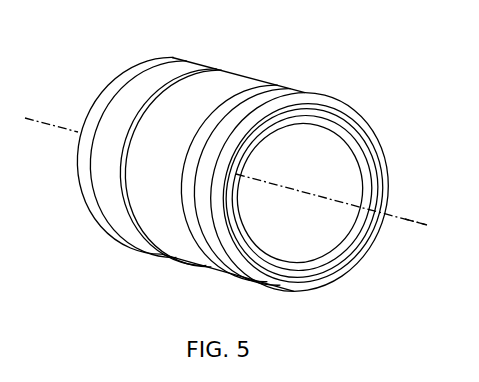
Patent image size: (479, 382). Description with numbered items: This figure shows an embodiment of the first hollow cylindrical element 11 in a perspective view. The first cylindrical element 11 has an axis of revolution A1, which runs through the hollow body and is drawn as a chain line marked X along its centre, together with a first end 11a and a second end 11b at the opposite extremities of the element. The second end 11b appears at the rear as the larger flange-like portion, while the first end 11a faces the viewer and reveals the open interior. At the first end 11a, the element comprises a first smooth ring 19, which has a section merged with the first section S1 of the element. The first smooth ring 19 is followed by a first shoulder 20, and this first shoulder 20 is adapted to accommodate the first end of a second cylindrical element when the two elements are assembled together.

The first hollow cylindrical element 11 is at (198, 62).
The first end 11a is at (390, 163).
The second end 11b is at (108, 76).
The first smooth ring 19 is at (342, 284).
The first shoulder 20 is at (352, 277).
The first section S1 is at (384, 197).
The optical axis X is at (226, 171).
The axis of revolution A1 is at (412, 224).